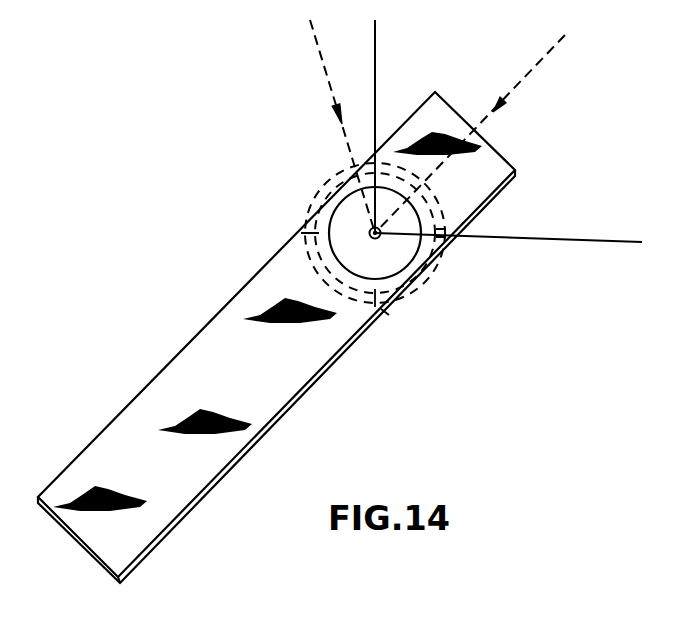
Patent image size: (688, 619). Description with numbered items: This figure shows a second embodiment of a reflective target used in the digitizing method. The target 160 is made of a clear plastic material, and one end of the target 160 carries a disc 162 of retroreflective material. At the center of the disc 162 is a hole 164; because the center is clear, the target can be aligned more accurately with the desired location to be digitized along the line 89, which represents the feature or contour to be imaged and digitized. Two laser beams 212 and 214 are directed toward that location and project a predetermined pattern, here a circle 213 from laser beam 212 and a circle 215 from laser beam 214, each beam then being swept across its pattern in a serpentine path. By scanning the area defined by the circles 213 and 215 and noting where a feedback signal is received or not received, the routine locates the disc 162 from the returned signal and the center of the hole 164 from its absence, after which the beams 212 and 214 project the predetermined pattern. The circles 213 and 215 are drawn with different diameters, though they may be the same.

The line 89 is at (375, 73).
The target 160 is at (335, 362).
The disc 162 is at (347, 207).
The hole 164 is at (380, 238).
The laser beam 212 is at (318, 52).
The circle 213 is at (305, 247).
The laser beam 214 is at (527, 77).
The circle 215 is at (385, 312).